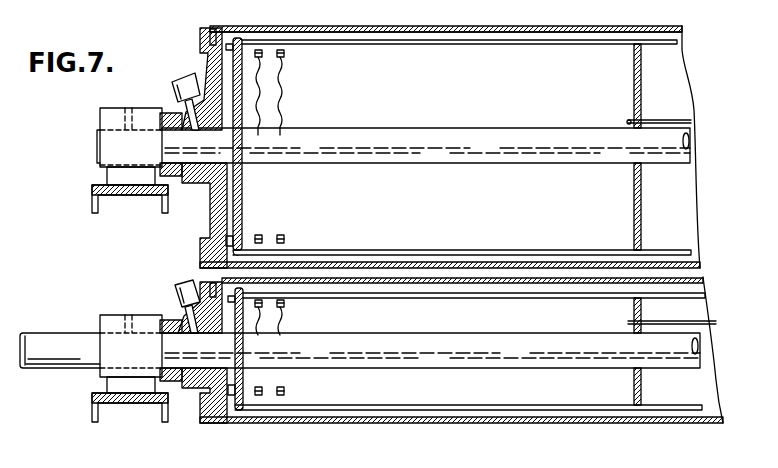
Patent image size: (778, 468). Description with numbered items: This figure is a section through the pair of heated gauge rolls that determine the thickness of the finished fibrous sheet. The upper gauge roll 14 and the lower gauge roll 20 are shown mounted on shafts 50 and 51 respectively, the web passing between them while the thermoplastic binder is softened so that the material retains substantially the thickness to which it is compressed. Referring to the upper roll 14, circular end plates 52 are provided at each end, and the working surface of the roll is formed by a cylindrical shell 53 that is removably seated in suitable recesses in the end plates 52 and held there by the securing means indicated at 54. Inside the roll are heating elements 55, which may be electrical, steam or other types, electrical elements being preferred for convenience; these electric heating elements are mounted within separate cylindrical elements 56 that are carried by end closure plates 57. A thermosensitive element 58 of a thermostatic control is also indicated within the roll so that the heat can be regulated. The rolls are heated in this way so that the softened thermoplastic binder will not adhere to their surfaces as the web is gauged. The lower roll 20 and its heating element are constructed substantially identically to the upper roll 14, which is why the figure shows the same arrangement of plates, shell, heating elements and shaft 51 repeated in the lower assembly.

The gauge roll 14 is at (481, 31).
The lower gauge roll 20 is at (351, 424).
The shaft 50 is at (412, 164).
The shaft 51 is at (403, 336).
The circular end plate 52 is at (215, 215).
The cylindrical shell 53 is at (345, 32).
The securing means 54 is at (213, 30).
The heating element 55 is at (282, 53).
The cylindrical element 56 is at (429, 45).
The end closure plate 57 is at (244, 205).
The thermosensitive element 58 is at (628, 121).